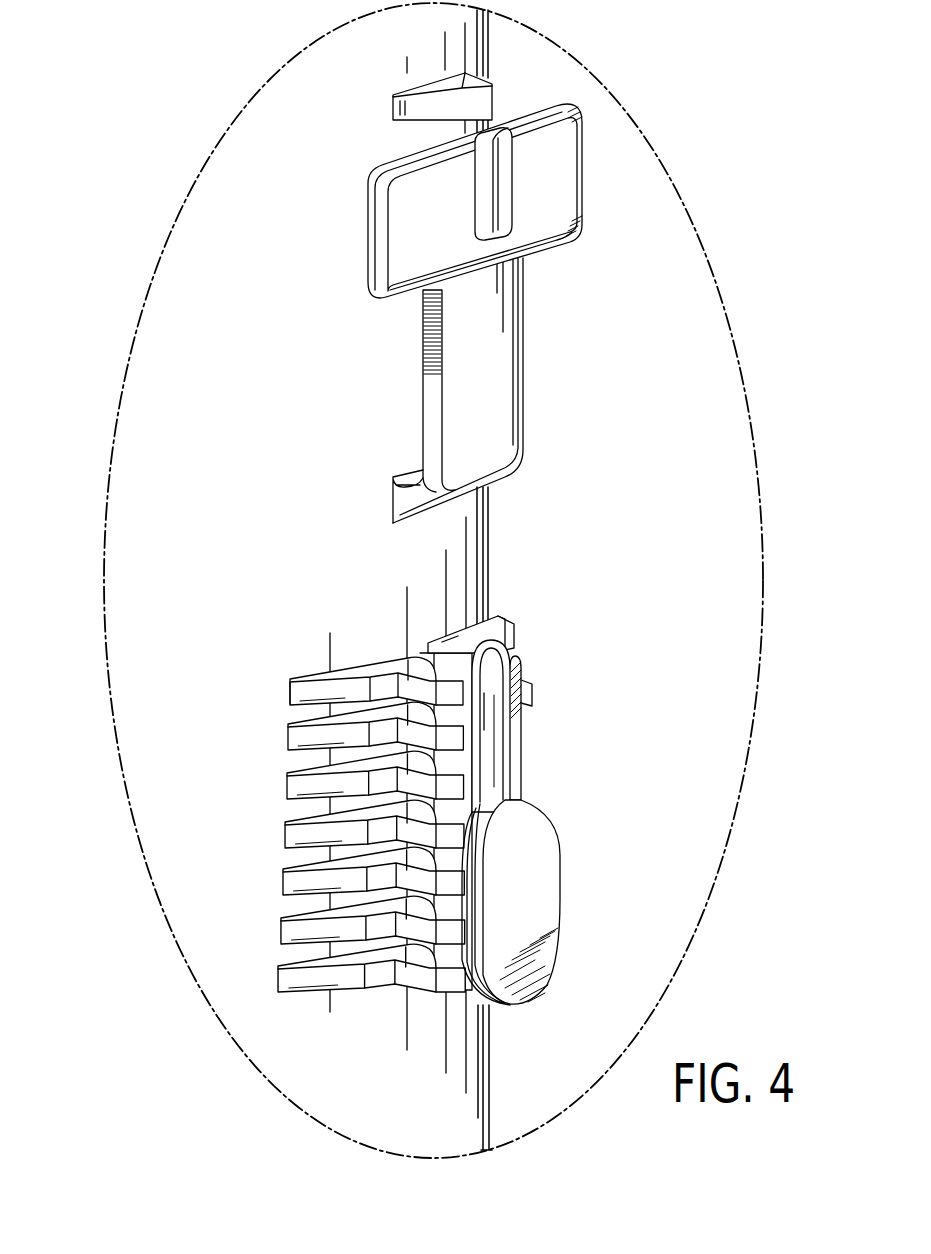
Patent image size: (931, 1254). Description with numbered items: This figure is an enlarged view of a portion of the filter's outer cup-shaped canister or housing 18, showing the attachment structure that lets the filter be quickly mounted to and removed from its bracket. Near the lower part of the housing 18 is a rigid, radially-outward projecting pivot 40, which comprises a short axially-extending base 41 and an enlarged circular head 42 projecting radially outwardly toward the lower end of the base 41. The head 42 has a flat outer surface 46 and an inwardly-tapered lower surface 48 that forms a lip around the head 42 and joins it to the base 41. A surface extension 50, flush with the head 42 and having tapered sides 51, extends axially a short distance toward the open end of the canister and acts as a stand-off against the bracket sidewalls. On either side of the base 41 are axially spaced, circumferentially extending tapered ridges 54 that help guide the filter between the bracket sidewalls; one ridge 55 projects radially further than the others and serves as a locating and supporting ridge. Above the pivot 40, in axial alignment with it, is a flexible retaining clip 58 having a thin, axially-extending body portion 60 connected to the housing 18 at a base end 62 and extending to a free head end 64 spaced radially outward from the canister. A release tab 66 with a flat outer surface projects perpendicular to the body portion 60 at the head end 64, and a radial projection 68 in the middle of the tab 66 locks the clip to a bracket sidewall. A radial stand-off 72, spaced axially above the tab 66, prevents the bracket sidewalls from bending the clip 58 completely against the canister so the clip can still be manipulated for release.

The housing 18 is at (148, 530).
The pivot 40 is at (584, 812).
The base 41 is at (460, 648).
The head 42 is at (517, 948).
The flat outer surface 46 is at (522, 886).
The angled lower surface 48 is at (475, 960).
The surface extension 50 is at (518, 728).
The tapered sides 51 is at (490, 720).
The ridges 54 is at (276, 837).
The locating and supporting ridge 55 is at (307, 735).
The retaining clip 58 is at (556, 332).
The body portion 60 is at (502, 385).
The base end 62 is at (400, 497).
The free head end 64 is at (520, 272).
The release tab 66 is at (482, 169).
The radial projection 68 is at (491, 192).
The radial stand-off 72 is at (458, 83).